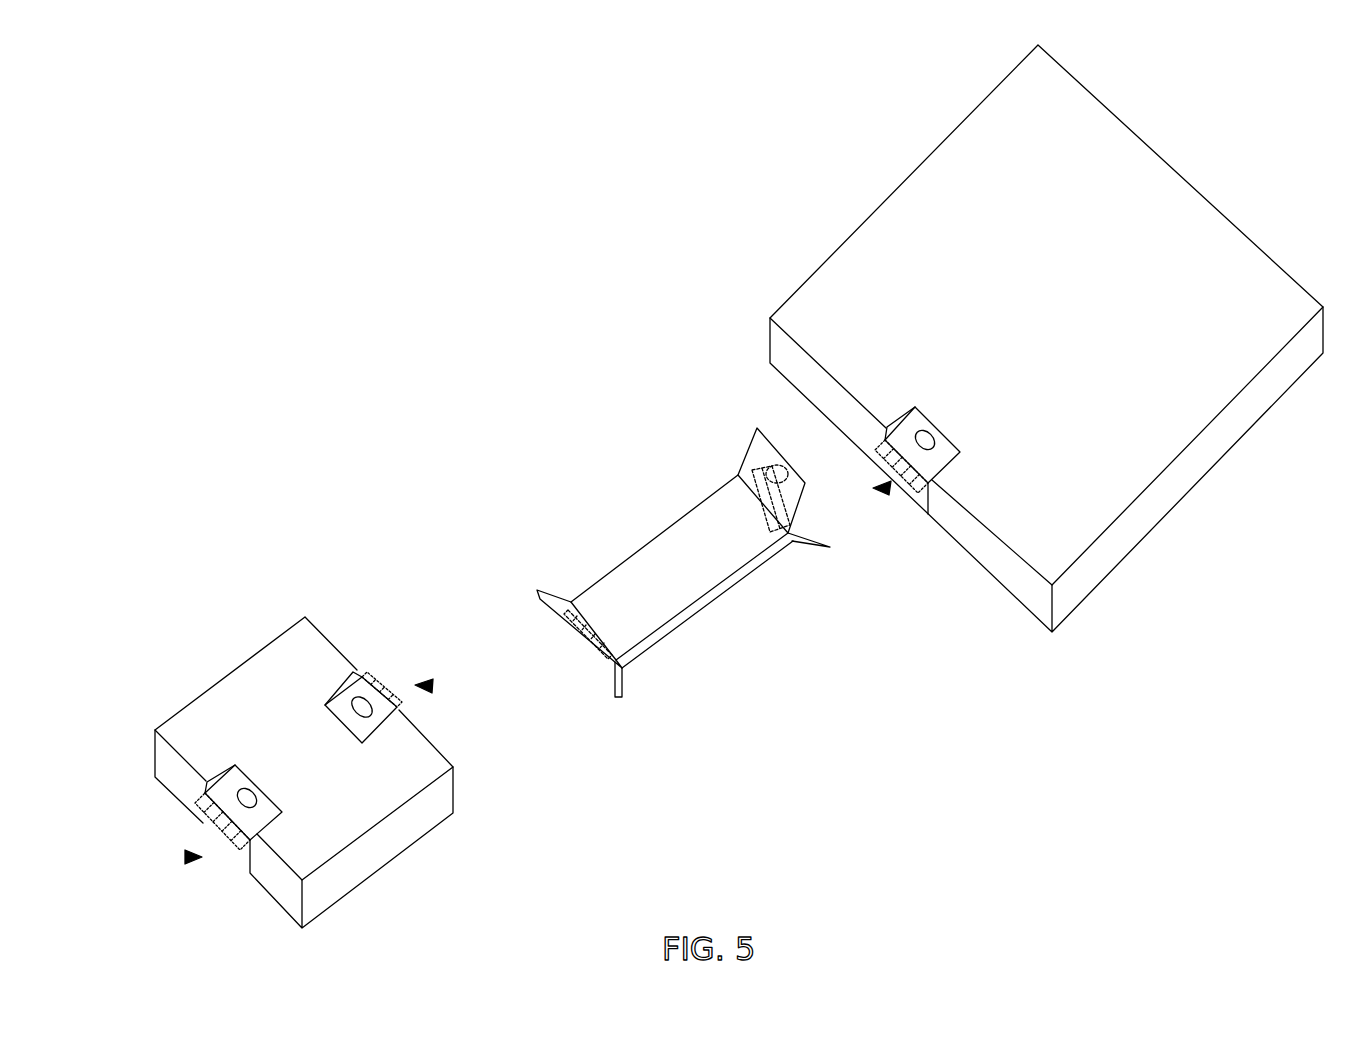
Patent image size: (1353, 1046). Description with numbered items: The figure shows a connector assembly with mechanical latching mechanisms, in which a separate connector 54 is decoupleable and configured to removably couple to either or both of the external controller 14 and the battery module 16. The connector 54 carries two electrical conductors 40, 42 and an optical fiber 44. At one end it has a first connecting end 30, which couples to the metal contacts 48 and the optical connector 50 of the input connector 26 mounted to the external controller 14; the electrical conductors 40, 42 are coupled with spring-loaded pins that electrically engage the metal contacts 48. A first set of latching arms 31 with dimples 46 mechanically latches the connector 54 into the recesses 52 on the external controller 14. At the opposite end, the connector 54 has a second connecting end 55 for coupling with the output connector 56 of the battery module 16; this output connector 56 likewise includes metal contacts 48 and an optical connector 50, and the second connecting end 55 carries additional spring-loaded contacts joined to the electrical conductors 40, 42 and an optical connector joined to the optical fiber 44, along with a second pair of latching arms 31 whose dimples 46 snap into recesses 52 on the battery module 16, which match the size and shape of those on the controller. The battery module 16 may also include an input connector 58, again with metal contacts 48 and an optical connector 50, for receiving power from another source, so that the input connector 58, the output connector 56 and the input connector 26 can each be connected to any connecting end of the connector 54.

The external controller 14 is at (1227, 218).
The battery module 16 is at (452, 808).
The input connector 26 is at (889, 488).
The first connecting end 30 is at (783, 543).
The latching arms 31 is at (830, 547).
The electrical conductor 40 is at (616, 660).
The electrical conductor 42 is at (740, 478).
The optical fiber 44 is at (760, 488).
The dimples 46 is at (772, 462).
The metal contacts 48 is at (915, 490).
The optical connector 50 is at (900, 487).
The recesses 52 is at (930, 437).
The connector 54 is at (679, 518).
The second connecting end 55 is at (622, 697).
The output connector 56 is at (432, 686).
The input connector 58 is at (186, 857).